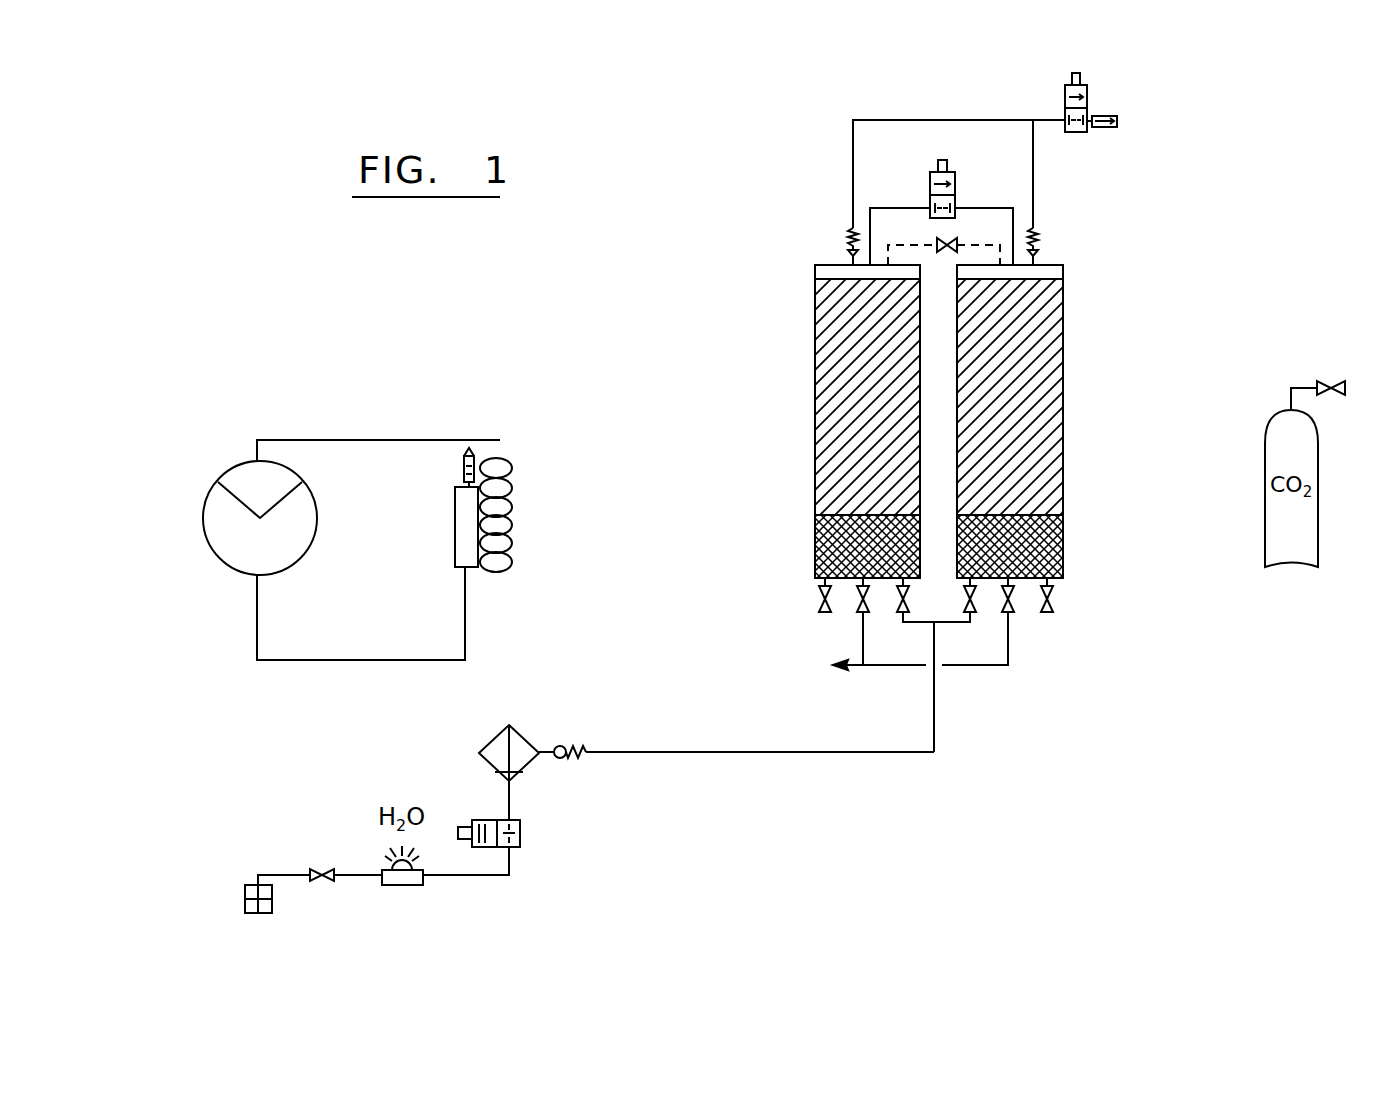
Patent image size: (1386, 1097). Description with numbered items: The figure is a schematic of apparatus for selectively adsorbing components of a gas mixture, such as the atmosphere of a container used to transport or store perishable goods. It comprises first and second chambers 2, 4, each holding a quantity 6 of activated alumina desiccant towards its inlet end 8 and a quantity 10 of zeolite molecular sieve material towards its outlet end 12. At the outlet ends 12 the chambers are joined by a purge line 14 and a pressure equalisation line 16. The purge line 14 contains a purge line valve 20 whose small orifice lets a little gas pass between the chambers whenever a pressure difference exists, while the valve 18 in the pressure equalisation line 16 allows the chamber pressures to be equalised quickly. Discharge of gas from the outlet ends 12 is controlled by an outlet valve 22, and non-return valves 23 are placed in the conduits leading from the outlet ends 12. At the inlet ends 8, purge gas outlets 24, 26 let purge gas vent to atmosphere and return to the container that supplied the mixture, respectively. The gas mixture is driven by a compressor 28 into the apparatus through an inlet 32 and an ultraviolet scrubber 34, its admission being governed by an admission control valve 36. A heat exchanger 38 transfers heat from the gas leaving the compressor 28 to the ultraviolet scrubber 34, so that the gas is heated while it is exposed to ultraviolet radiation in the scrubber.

The first chamber 2 is at (813, 390).
The second chamber 4 is at (1073, 421).
The quantity of activated alumina desiccant 6 is at (1046, 557).
The inlet end 8 is at (1023, 580).
The quantity of zeolite molecular sieve material 10 is at (1015, 345).
The outlet end 12 is at (950, 483).
The purge line 14 is at (997, 243).
The pressure equalisation line 16 is at (988, 207).
The valve 18 is at (943, 158).
The purge line valve 20 is at (940, 243).
The outlet valve 22 is at (1083, 75).
The non-return valves 23 is at (847, 238).
The purge gas outlet 24 is at (822, 598).
The purge gas outlet 26 is at (890, 668).
The compressor 28 is at (212, 500).
The inlet 32 is at (456, 467).
The ultraviolet scrubber 34 is at (463, 538).
The admission control valve 36 is at (900, 614).
The heat exchanger 38 is at (518, 538).